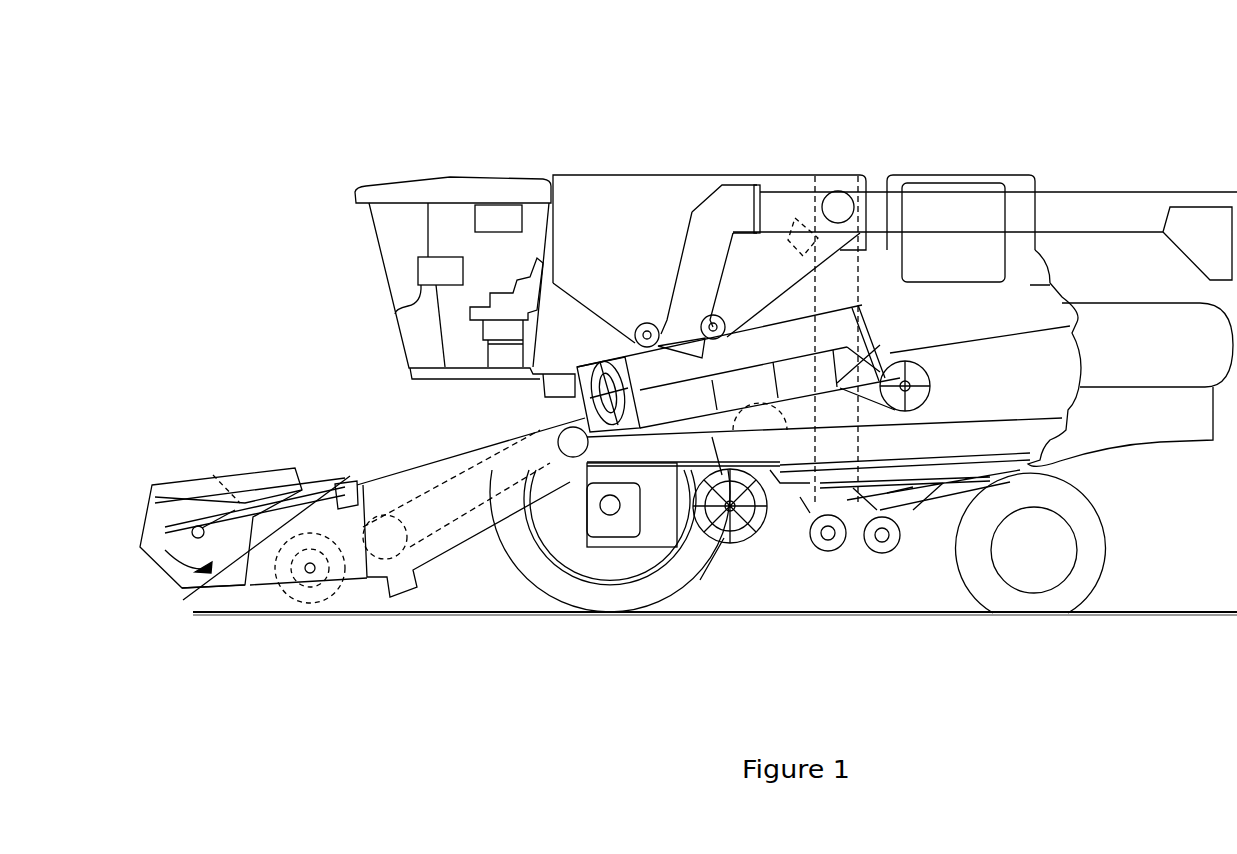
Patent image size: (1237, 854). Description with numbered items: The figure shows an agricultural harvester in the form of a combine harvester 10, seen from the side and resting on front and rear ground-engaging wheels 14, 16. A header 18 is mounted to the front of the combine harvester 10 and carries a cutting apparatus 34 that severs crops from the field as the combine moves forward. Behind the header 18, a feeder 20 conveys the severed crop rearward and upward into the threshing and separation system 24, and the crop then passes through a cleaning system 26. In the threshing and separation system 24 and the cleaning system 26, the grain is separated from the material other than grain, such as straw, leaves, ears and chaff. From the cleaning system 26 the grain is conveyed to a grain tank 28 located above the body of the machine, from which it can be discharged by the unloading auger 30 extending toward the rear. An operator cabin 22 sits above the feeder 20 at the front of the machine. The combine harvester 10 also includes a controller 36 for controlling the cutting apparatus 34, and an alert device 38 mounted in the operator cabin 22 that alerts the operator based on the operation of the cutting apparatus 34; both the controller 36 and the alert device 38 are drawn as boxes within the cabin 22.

The combine harvester 10 is at (443, 168).
The front ground-engaging wheels 14 is at (522, 578).
The rear ground-engaging wheels 16 is at (1105, 560).
The header 18 is at (232, 463).
The feeder 20 is at (418, 463).
The operator cabin 22 is at (377, 261).
The threshing and separation system 24 is at (558, 412).
The cleaning system 26 is at (791, 537).
The grain tank 28 is at (604, 175).
The unloading auger 30 is at (1120, 192).
The cutting apparatus 34 is at (231, 610).
The controller 36 is at (395, 314).
The alert device 38 is at (487, 205).